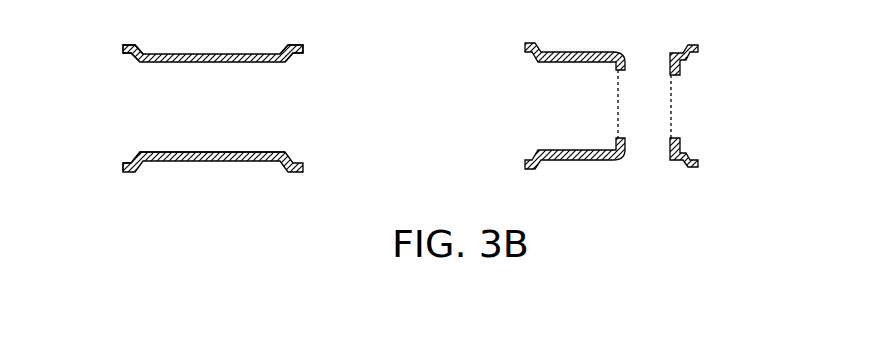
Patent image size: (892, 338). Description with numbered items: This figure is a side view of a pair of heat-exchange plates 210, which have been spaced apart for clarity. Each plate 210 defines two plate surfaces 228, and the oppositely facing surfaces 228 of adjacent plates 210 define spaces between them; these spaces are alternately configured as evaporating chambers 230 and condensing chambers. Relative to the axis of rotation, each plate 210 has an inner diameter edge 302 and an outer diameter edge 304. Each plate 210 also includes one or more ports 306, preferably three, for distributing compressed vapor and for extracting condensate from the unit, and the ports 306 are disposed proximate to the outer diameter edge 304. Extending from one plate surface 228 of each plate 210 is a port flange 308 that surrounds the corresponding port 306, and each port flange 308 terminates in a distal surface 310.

The heat-exchange plate 210 is at (205, 53).
The plate surface 228 is at (258, 53).
The outer diameter edge 304 is at (120, 50).
The inner diameter edge 302 is at (304, 165).
The port flange 308 is at (615, 140).
The distal surface 310 is at (615, 72).
The port 306 is at (650, 65).
The evaporating chamber 230 is at (380, 122).